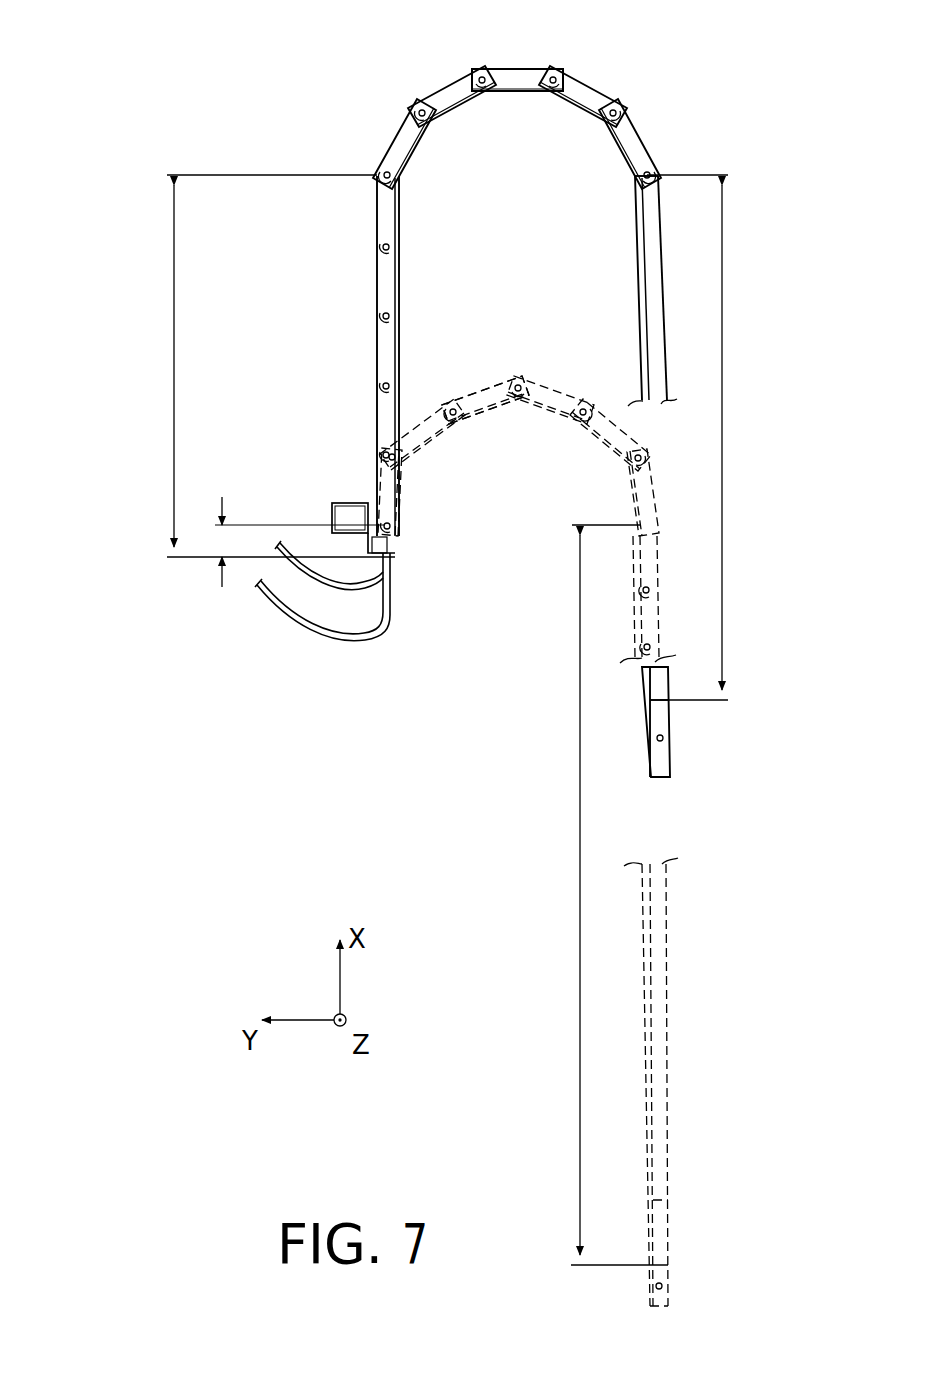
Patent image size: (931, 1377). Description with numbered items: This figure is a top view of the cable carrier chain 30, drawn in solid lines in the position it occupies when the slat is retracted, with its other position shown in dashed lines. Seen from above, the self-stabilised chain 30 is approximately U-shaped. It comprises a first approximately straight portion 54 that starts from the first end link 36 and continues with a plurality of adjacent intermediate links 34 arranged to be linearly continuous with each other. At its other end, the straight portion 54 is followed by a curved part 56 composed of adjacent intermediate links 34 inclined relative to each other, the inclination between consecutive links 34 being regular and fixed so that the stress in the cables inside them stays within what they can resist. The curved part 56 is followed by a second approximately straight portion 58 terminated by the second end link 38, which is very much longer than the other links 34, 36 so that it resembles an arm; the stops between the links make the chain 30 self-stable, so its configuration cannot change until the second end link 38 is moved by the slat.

The cable carrier chain 30 is at (670, 60).
The intermediate links 34 is at (450, 97).
The first end link 36 is at (392, 534).
The second end link 38 is at (648, 273).
The first approximately straight portion 54 is at (174, 366).
The curved part 56 is at (535, 68).
The second approximately straight portion 58 is at (722, 432).